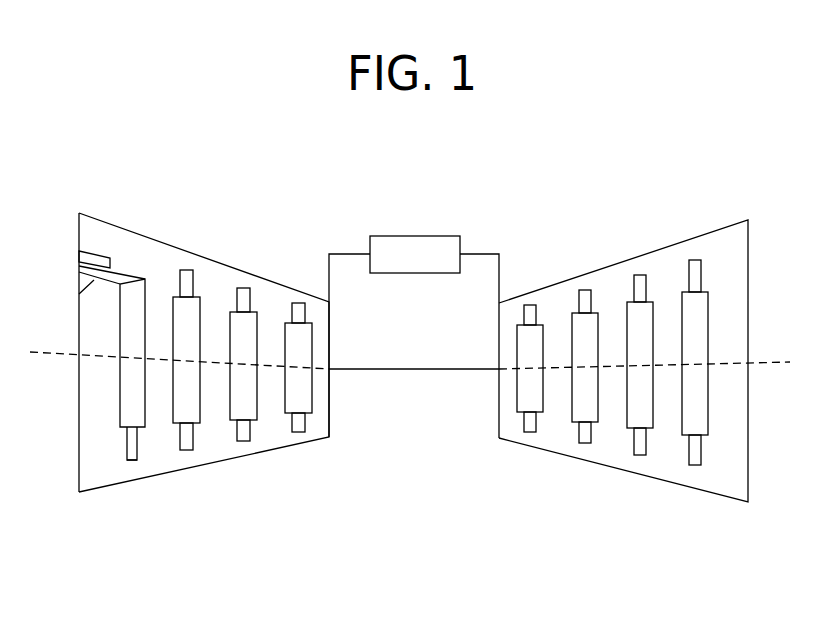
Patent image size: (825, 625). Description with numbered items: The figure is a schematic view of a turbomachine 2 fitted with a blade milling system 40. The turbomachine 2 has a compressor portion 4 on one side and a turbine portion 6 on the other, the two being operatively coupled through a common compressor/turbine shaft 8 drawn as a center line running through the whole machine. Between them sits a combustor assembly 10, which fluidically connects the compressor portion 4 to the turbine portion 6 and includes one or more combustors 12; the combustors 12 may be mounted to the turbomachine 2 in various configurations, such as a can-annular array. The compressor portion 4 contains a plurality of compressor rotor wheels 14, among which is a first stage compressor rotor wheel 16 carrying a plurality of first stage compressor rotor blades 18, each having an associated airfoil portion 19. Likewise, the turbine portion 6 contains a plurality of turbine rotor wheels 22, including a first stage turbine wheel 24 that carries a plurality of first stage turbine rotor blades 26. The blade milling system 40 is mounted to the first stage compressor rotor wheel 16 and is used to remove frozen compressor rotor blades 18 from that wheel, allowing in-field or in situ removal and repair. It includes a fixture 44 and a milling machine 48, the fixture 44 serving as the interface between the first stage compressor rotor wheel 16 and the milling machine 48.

The turbomachine 2 is at (214, 194).
The compressor portion 4 is at (166, 384).
The turbine portion 6 is at (649, 395).
The common compressor/turbine shaft 8 is at (374, 371).
The combustor assembly 10 is at (366, 212).
The combustor 12 is at (412, 236).
The compressor rotor wheels 14 is at (162, 462).
The first stage compressor rotor wheel 16 is at (118, 417).
The first stage compressor rotor blades 18 is at (108, 466).
The airfoil portion 19 is at (137, 461).
The turbine rotor wheels 22 is at (726, 462).
The first stage turbine wheel 24 is at (545, 418).
The first stage turbine rotor blades 26 is at (528, 306).
The blade milling system 40 is at (60, 228).
The fixture 44 is at (76, 297).
The milling machine 48 is at (79, 255).